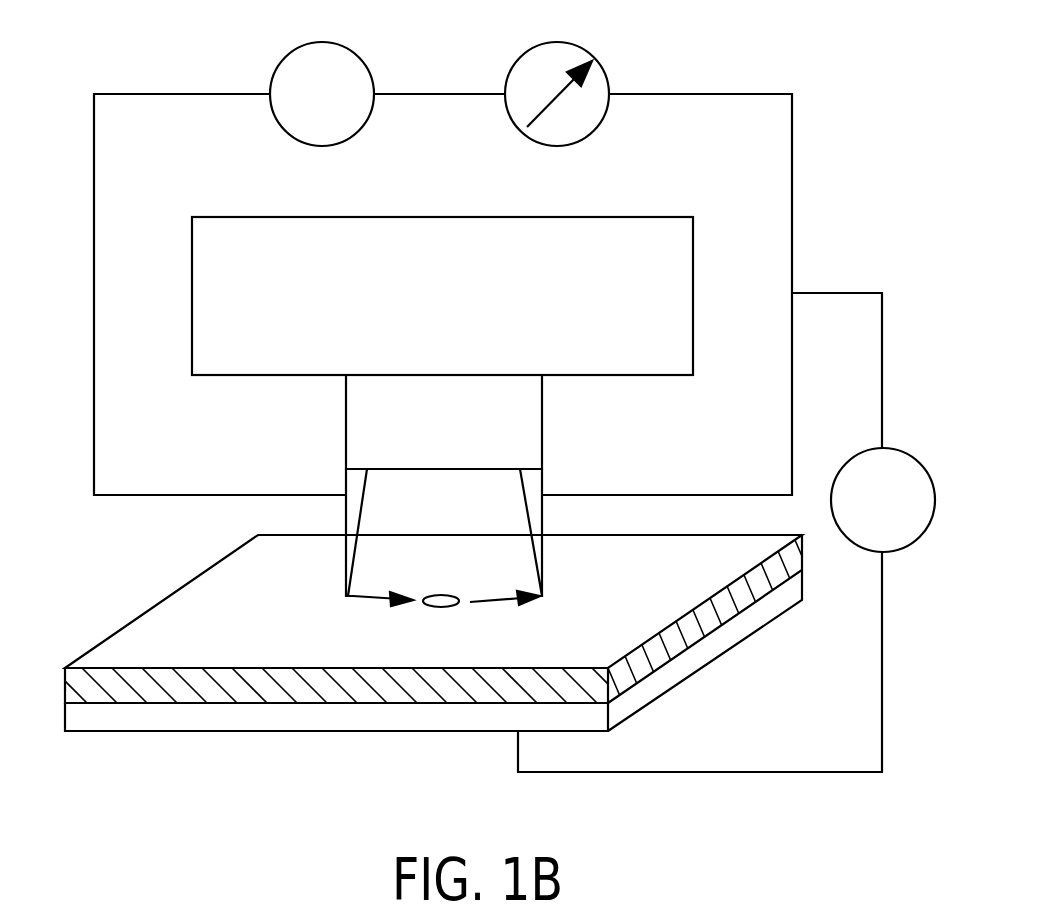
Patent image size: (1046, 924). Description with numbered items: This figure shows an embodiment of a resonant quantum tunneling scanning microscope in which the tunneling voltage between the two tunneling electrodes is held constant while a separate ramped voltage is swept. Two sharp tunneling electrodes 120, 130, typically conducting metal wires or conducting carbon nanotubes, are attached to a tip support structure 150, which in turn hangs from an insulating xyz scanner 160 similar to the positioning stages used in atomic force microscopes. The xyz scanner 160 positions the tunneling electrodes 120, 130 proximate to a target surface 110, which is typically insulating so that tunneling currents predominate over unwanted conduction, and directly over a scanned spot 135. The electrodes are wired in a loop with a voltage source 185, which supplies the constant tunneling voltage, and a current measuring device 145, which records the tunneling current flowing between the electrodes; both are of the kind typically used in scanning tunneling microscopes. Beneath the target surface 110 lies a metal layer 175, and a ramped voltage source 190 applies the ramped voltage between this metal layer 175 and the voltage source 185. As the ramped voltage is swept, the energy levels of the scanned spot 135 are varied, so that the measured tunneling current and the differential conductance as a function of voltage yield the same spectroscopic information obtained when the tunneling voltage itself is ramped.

The target surface 110 is at (697, 590).
The tunneling electrode 120 is at (346, 570).
The tunneling electrode 130 is at (543, 572).
The scanned spot 135 is at (442, 593).
The current measuring device 145 is at (600, 62).
The tip support structure 150 is at (421, 431).
The xyz scanner 160 is at (421, 312).
The metal layer 175 is at (705, 648).
The voltage source 185 is at (364, 60).
The ramped voltage source 190 is at (893, 451).